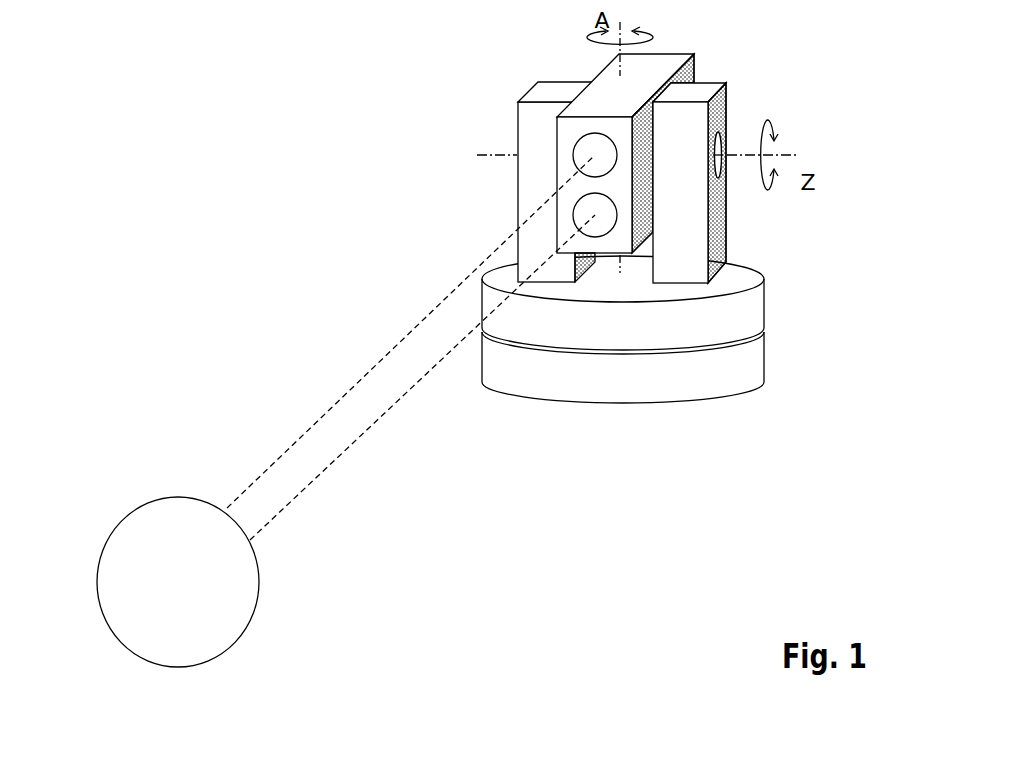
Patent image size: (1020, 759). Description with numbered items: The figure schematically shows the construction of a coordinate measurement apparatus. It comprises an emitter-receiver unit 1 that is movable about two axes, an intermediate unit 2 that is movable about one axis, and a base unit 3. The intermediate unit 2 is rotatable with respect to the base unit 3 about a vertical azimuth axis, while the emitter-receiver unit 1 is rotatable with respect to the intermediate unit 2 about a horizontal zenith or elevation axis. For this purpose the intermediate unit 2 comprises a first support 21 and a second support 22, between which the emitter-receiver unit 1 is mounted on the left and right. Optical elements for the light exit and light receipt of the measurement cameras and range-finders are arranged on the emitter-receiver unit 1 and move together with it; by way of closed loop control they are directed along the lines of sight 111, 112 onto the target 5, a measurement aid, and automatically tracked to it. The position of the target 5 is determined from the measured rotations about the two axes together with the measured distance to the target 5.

The emitter-receiver unit 1 is at (673, 62).
The intermediate unit 2 is at (758, 270).
The base unit 3 is at (763, 365).
The target 5 is at (108, 538).
The first support 21 is at (727, 118).
The second support 22 is at (522, 117).
The first line of sight (optical axis) 111 is at (375, 363).
The second line of sight (optical axis) 112 is at (390, 408).